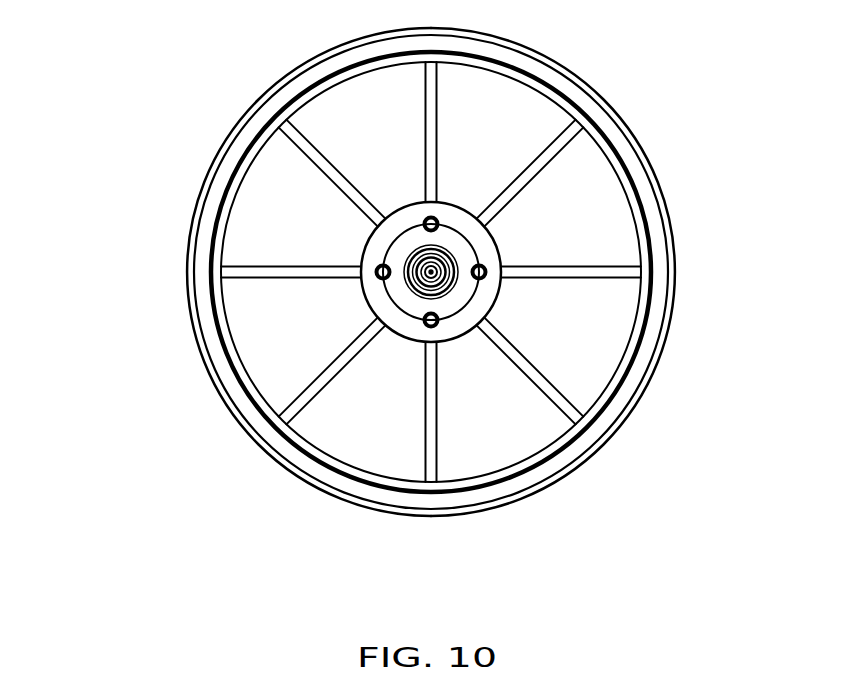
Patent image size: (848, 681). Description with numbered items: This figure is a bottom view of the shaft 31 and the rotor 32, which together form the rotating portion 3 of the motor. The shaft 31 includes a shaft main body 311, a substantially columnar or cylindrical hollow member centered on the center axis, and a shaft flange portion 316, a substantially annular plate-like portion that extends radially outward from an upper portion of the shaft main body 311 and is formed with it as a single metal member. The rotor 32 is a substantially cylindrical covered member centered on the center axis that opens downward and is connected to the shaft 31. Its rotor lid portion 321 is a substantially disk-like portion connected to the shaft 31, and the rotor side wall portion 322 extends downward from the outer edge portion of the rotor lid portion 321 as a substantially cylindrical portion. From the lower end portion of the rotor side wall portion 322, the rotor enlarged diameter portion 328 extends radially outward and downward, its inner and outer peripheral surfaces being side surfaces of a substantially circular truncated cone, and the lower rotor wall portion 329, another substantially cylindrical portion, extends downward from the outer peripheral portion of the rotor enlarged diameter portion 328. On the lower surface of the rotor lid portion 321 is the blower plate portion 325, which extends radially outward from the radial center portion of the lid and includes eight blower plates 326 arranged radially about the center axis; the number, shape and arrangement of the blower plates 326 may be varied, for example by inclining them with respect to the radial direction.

The rotating portion 3 is at (190, 34).
The shaft 31 is at (342, 543).
The shaft main body 311 is at (418, 292).
The shaft flange portion 316 is at (398, 293).
The rotor 32 is at (86, 243).
The rotor lid portion 321 is at (257, 220).
The rotor side wall portion 322 is at (208, 247).
The blower plate portion 325 is at (732, 388).
The blower plate 326 is at (303, 157).
The rotor enlarged diameter portion 328 is at (200, 287).
The lower rotor wall portion 329 is at (187, 327).